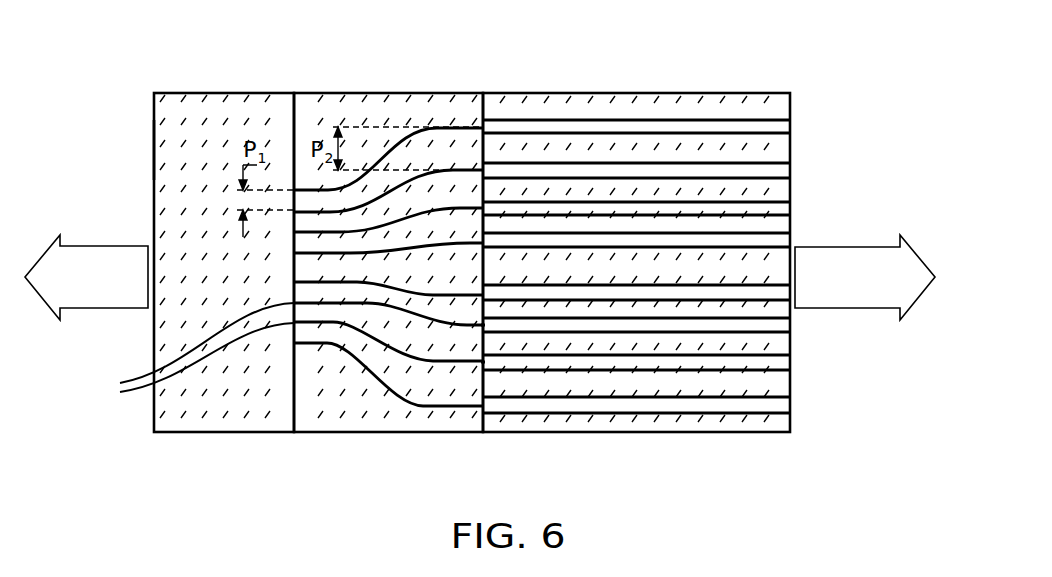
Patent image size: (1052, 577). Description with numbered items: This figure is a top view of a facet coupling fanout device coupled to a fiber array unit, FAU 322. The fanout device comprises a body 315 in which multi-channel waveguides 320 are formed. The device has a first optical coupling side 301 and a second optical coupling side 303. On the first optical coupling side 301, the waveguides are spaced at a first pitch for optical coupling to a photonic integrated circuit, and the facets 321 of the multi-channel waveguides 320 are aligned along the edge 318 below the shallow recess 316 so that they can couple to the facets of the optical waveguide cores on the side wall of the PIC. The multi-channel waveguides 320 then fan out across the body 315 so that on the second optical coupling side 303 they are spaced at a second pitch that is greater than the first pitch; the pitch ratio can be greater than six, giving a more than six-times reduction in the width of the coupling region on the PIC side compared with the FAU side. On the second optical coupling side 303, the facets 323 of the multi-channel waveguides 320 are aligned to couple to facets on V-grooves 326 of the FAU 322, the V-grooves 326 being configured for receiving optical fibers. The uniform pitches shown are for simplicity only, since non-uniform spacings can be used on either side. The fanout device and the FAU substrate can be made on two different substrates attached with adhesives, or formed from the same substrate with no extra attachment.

The first optical coupling side 301 is at (106, 222).
The second optical coupling side 303 is at (870, 220).
The body 315 is at (185, 93).
The shallow recess 316 is at (174, 142).
The edge 318 is at (293, 124).
The multi-channel waveguides 320 is at (423, 364).
The facets 321 is at (188, 350).
The FAU 322 is at (648, 93).
The facets 323 is at (483, 325).
The V-grooves 326 is at (726, 125).